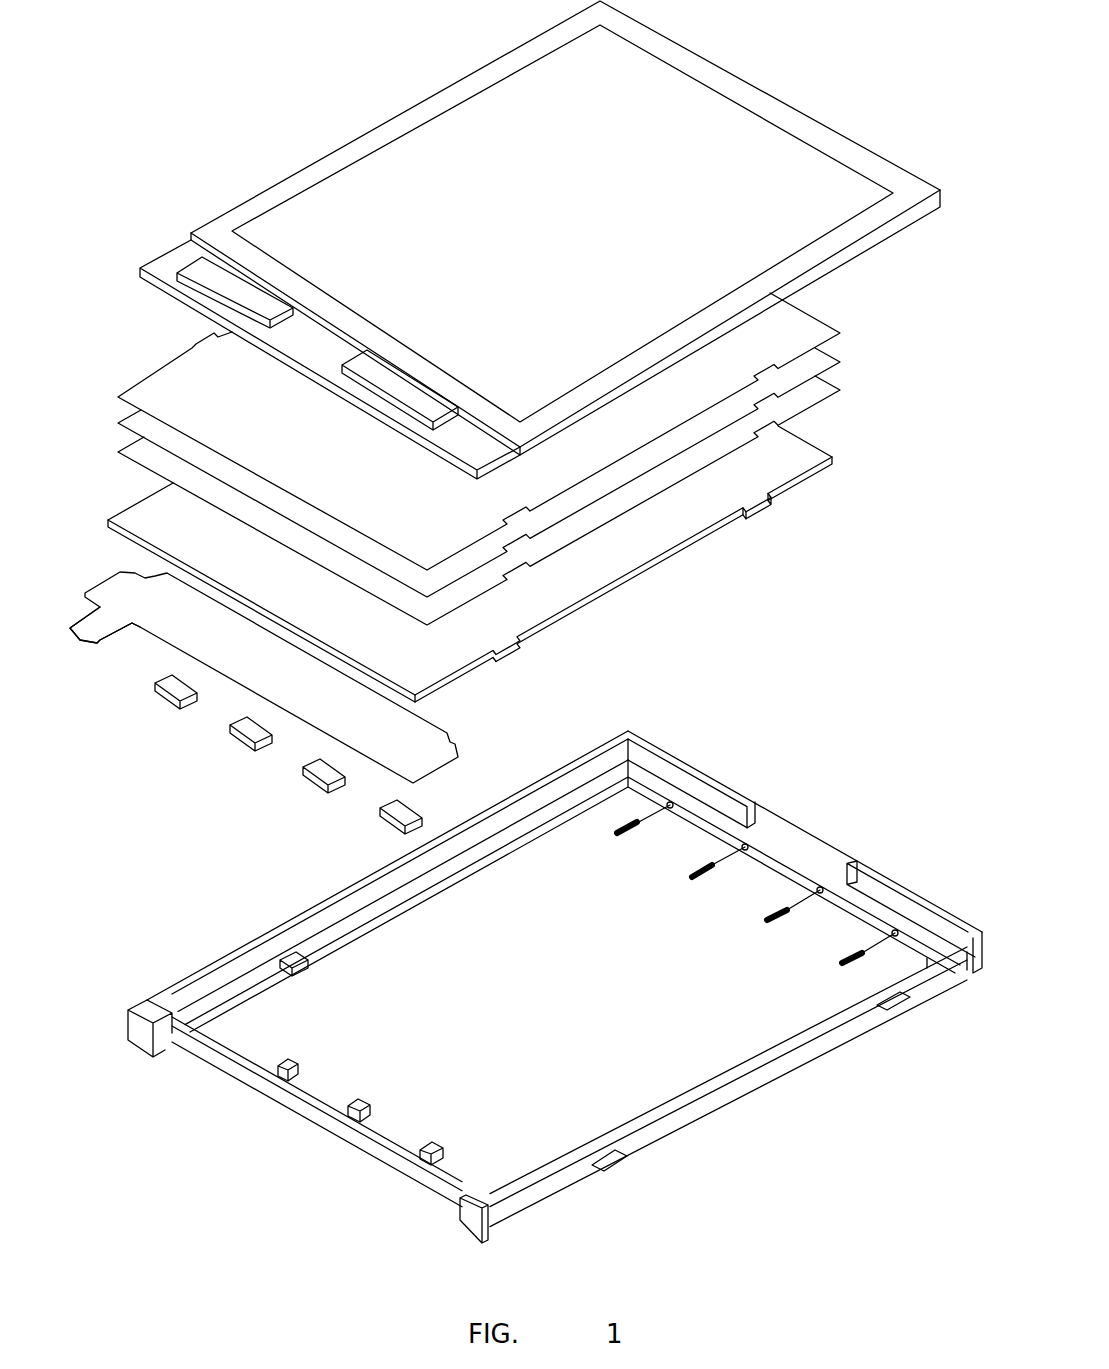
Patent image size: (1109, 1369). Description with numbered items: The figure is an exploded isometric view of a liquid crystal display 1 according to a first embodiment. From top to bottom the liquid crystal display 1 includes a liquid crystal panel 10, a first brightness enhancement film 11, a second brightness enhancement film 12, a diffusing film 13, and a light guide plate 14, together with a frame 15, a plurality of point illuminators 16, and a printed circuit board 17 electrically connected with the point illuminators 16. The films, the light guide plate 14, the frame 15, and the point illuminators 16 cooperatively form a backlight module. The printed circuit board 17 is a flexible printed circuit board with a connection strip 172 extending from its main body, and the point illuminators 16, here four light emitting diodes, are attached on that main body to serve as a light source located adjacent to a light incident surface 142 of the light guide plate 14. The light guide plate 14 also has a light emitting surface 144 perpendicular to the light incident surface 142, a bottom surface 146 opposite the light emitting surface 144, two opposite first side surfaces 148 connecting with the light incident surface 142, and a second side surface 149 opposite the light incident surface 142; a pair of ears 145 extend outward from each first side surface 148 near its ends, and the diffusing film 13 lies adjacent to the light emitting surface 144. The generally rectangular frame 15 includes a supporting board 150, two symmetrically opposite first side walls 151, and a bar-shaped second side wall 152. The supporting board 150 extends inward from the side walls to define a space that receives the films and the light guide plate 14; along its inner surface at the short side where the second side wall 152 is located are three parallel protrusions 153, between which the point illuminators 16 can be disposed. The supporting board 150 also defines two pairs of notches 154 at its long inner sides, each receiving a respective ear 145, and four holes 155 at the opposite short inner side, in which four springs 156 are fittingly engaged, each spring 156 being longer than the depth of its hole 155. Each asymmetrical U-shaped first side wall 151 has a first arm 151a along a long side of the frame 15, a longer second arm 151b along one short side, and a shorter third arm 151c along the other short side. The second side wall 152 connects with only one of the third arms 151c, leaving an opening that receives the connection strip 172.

The liquid crystal display 1 is at (385, 86).
The liquid crystal panel 10 is at (875, 160).
The first brightness enhancement film 11 is at (820, 333).
The second brightness enhancement film 12 is at (820, 362).
The diffusing film 13 is at (820, 390).
The light guide plate 14 is at (514, 559).
The light incident surface 142 is at (415, 695).
The light emitting surface 144 is at (798, 452).
The ears 145 is at (758, 503).
The bottom surface 146 is at (655, 572).
The first side surfaces 148 is at (587, 600).
The second side surface 149 is at (830, 452).
The frame 15 is at (555, 987).
The supporting board 150 is at (370, 915).
The first side walls 151 is at (627, 735).
The first arm 151a is at (727, 1092).
The second arm 151b is at (883, 888).
The third arm 151c is at (472, 1220).
The second side wall 152 is at (248, 1085).
The protrusions 153 is at (352, 1100).
The notches 154 is at (290, 960).
The holes 155 is at (820, 887).
The springs 156 is at (633, 822).
The point illuminators 16 is at (252, 730).
The printed circuit board 17 is at (296, 677).
The connection strip 172 is at (100, 628).